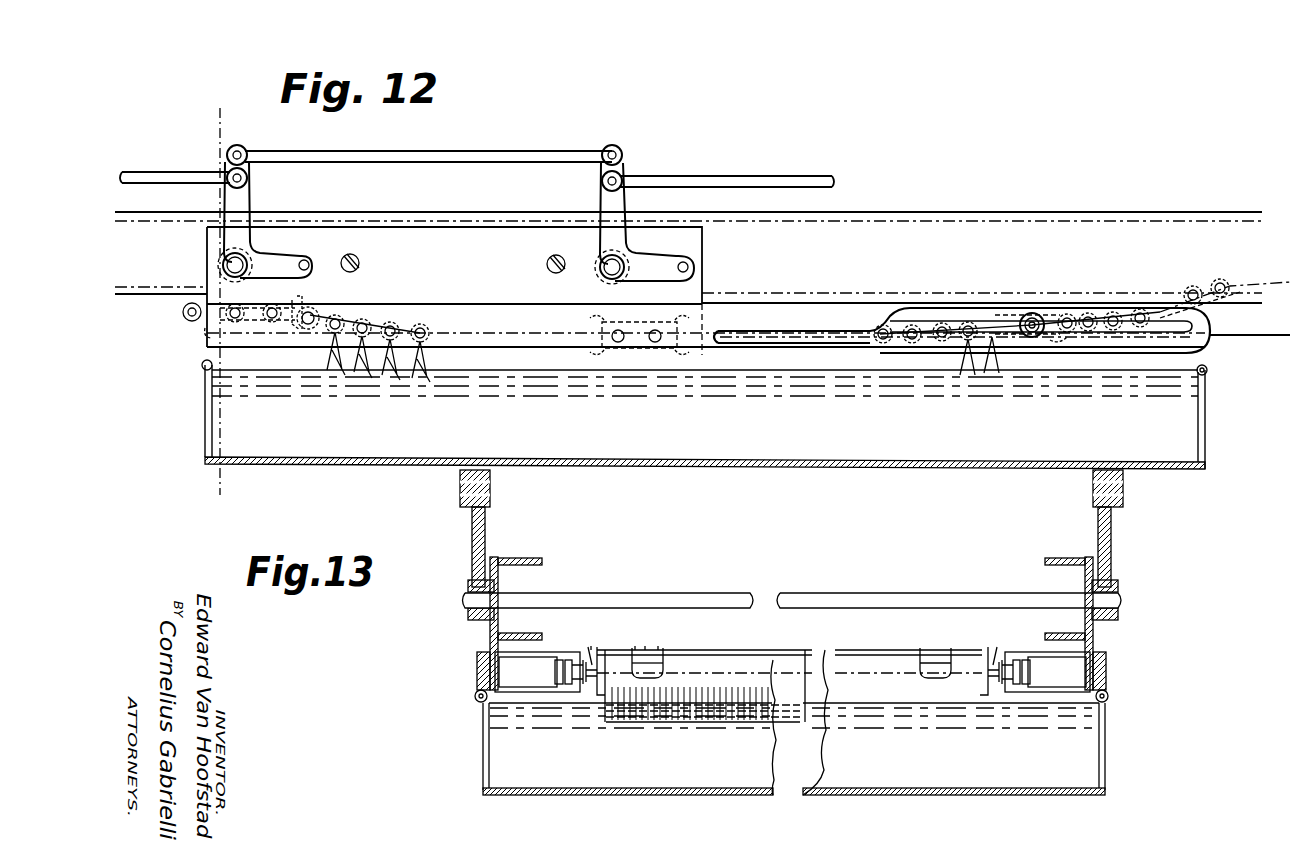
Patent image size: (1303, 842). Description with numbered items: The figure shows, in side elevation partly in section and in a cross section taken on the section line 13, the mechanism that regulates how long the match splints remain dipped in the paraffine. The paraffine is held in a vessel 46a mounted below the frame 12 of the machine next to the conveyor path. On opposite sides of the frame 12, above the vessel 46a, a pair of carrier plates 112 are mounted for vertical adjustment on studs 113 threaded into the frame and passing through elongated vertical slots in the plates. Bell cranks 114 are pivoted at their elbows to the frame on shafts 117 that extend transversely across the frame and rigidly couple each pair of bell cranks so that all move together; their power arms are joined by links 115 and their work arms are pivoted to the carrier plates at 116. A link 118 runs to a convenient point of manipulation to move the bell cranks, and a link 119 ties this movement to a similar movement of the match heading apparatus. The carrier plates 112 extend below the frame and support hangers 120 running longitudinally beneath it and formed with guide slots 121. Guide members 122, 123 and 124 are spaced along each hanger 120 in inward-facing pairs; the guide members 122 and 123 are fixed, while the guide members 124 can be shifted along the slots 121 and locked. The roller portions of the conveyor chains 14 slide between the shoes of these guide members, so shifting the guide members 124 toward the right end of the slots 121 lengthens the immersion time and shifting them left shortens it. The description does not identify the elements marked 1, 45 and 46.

In FIG. 12, the roller 1 is at (1210, 286).
In FIG. 12, the frame 12 is at (1040, 200).
In FIG. 13, the frame 12 is at (535, 558).
In FIG. 12, the section line 13 is at (220, 305).
In FIG. 12, the chains 14 is at (1116, 314).
In FIG. 13, the chains 14 is at (554, 672).
In FIG. 12, the chain 45 is at (402, 327).
In FIG. 12, the trough 46 is at (704, 414).
In FIG. 12, the vessel 46a is at (745, 465).
In FIG. 12, the carrier plates 112 is at (705, 277).
In FIG. 13, the carrier plates 112 is at (490, 650).
In FIG. 12, the studs 113 is at (360, 262).
In FIG. 12, the bell cranks 114 is at (243, 200).
In FIG. 12, the links 115 is at (428, 152).
In FIG. 12, the pivot connection 116 is at (309, 260).
In FIG. 12, the shafts 117 is at (222, 265).
In FIG. 12, the link 118 is at (140, 170).
In FIG. 12, the link 119 is at (790, 180).
In FIG. 12, the hangers 120 is at (207, 343).
In FIG. 13, the hangers 120 is at (477, 672).
In FIG. 12, the guide slots 121 is at (858, 338).
In FIG. 12, the guide member 122 is at (262, 330).
In FIG. 13, the guide member 122 is at (530, 700).
In FIG. 12, the guide member 123 is at (656, 346).
In FIG. 12, the guide member 124 is at (1055, 336).